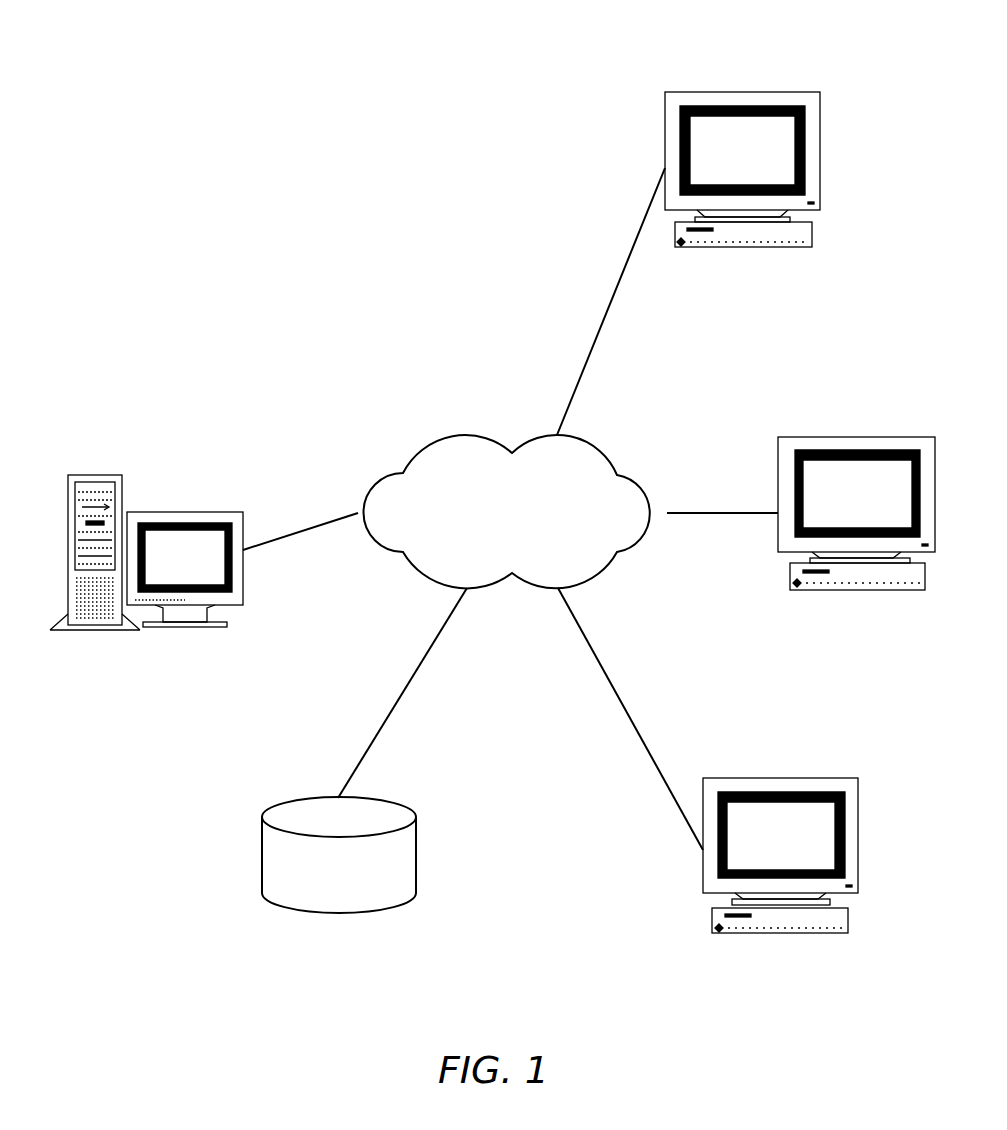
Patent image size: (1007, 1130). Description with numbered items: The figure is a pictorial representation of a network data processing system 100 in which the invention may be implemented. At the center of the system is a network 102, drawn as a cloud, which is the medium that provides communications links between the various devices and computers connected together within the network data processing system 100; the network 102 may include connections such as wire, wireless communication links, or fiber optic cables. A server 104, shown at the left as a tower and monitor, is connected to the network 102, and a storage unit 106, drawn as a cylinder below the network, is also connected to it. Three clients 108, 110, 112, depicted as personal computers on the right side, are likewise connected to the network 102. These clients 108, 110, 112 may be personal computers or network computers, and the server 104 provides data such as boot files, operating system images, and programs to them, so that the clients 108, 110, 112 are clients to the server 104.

The network data processing system 100 is at (532, 861).
The network 102 is at (462, 435).
The server 104 is at (147, 518).
The storage unit 106 is at (318, 902).
The client 108 is at (668, 97).
The client 110 is at (790, 445).
The client 112 is at (850, 790).